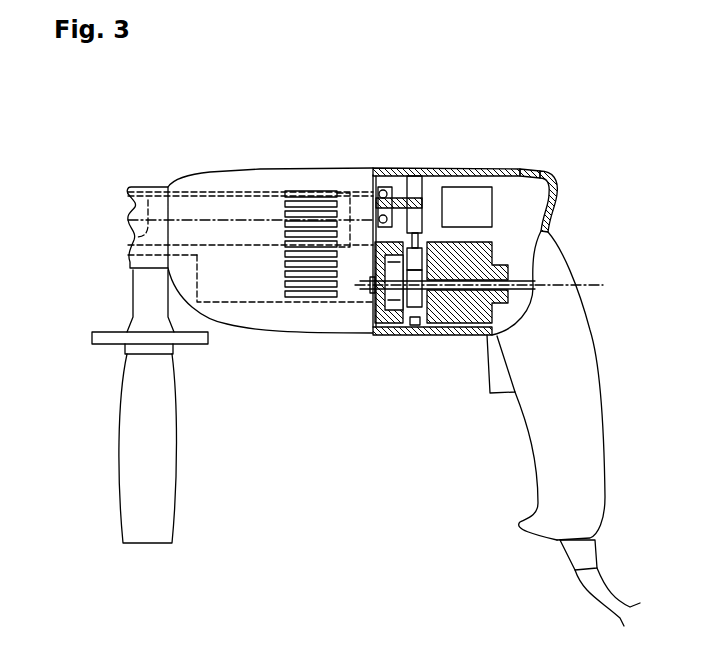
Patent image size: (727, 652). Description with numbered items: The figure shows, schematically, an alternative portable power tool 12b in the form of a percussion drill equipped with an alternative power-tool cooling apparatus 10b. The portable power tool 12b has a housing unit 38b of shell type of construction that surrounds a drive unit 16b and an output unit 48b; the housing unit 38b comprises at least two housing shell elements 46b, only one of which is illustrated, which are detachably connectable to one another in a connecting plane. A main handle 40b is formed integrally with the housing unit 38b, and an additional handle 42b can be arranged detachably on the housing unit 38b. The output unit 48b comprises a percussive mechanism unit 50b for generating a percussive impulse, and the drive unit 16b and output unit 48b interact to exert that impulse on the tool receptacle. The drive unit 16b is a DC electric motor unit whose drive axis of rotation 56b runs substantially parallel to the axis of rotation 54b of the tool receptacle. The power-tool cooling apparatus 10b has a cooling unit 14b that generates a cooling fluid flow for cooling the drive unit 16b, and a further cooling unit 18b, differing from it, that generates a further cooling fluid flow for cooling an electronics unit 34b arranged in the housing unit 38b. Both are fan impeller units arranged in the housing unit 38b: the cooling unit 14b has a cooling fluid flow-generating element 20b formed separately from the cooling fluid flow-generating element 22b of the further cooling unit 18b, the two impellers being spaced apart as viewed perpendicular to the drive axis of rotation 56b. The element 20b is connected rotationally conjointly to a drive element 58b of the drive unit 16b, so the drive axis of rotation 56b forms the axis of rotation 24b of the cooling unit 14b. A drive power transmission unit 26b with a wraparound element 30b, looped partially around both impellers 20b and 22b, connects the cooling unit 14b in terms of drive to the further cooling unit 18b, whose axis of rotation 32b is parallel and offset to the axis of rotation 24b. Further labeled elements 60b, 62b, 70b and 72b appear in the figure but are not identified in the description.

The power-tool cooling apparatus 10b is at (409, 156).
The portable power tool 12b is at (124, 160).
The cooling unit 14b is at (397, 344).
The drive unit 16b is at (467, 346).
The further cooling unit 18b is at (467, 193).
The cooling fluid flow-generating element 20b is at (430, 334).
The cooling fluid flow-generating element 22b is at (429, 189).
The axis of rotation 24b is at (558, 285).
The drive axis of rotation 56b is at (447, 285).
The drive power transmission unit 26b is at (383, 163).
The wraparound element 30b is at (386, 177).
The axis of rotation 32b is at (362, 185).
The electronics unit 34b is at (491, 179).
The housing unit 38b is at (228, 161).
The main handle 40b is at (540, 457).
The additional handle 42b is at (137, 471).
The housing shell element 46b is at (255, 182).
The output unit 48b is at (358, 306).
The percussive mechanism unit 50b is at (134, 214).
The axis of rotation 54b is at (134, 240).
The drive element 58b is at (457, 333).
The housing rear corner 60b is at (546, 171).
The housing rear wall 62b is at (512, 189).
The cooling fins 70b is at (297, 316).
The cooling fin stack 72b is at (317, 296).